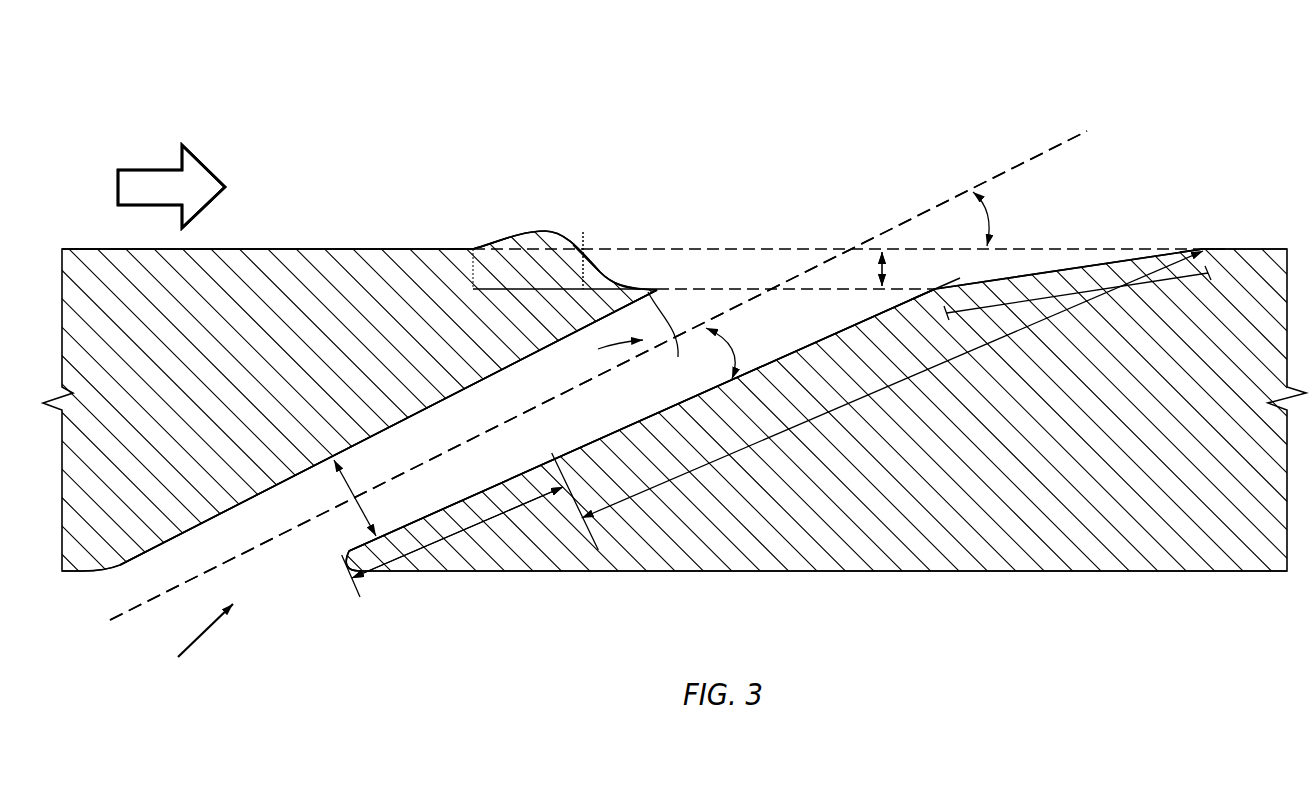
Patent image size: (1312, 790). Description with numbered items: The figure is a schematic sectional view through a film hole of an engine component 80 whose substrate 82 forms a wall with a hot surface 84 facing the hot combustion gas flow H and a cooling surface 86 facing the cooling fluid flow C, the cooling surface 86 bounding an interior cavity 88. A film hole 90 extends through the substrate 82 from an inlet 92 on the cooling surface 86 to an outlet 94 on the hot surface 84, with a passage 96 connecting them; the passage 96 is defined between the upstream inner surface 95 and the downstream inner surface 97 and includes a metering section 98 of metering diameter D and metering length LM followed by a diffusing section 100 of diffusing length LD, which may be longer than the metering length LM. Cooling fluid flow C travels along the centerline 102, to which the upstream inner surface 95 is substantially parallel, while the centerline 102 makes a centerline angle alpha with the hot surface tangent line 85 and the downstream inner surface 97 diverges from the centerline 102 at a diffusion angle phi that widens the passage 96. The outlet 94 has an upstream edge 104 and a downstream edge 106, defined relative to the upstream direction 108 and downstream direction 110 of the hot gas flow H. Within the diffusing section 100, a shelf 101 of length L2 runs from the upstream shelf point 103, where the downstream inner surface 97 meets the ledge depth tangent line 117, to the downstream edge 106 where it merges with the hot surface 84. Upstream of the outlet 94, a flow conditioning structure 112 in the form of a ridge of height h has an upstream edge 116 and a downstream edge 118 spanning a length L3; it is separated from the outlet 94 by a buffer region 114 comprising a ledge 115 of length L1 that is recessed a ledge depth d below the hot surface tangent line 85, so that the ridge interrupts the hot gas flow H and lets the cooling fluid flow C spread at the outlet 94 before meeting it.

The engine component 80 is at (369, 88).
The substrate 82 is at (1062, 525).
The hot surface 84 is at (313, 245).
The hot surface tangent line 85 is at (1113, 248).
The cooling surface 86 is at (942, 576).
The interior cavity 88 is at (390, 654).
The film hole 90 is at (782, 301).
The inlet 92 is at (312, 557).
The outlet 94 is at (744, 271).
The upstream inner surface 95 is at (399, 432).
The passage 96 is at (518, 435).
The downstream inner surface 97 is at (603, 425).
The metering section 98 is at (472, 421).
The diffusing section 100 is at (600, 359).
The shelf 101 is at (1010, 279).
The centerline 102 is at (1042, 148).
The upstream shelf point 103 is at (935, 289).
The upstream edge 104 is at (667, 292).
The downstream edge 106 is at (1202, 250).
The upstream direction 108 is at (151, 186).
The downstream direction 110 is at (194, 186).
The flow conditioning structure 112 is at (556, 230).
The buffer region 114 is at (632, 238).
The ledge 115 is at (627, 280).
The upstream edge 116 is at (473, 248).
The ledge depth tangent line 117 is at (850, 287).
The downstream edge 118 is at (590, 243).
The hot combustion gas flow H is at (147, 181).
The ridge height h is at (533, 243).
The ledge depth d is at (891, 267).
The metering diameter D is at (370, 506).
The cooling fluid flow C is at (200, 637).
The ledge length L1 is at (672, 343).
The shelf length L2 is at (1188, 281).
The ridge length L3 is at (478, 291).
The metering length LM is at (450, 537).
The diffusing length LD is at (685, 476).
The centerline angle alpha is at (992, 219).
The diffusion angle phi is at (729, 350).